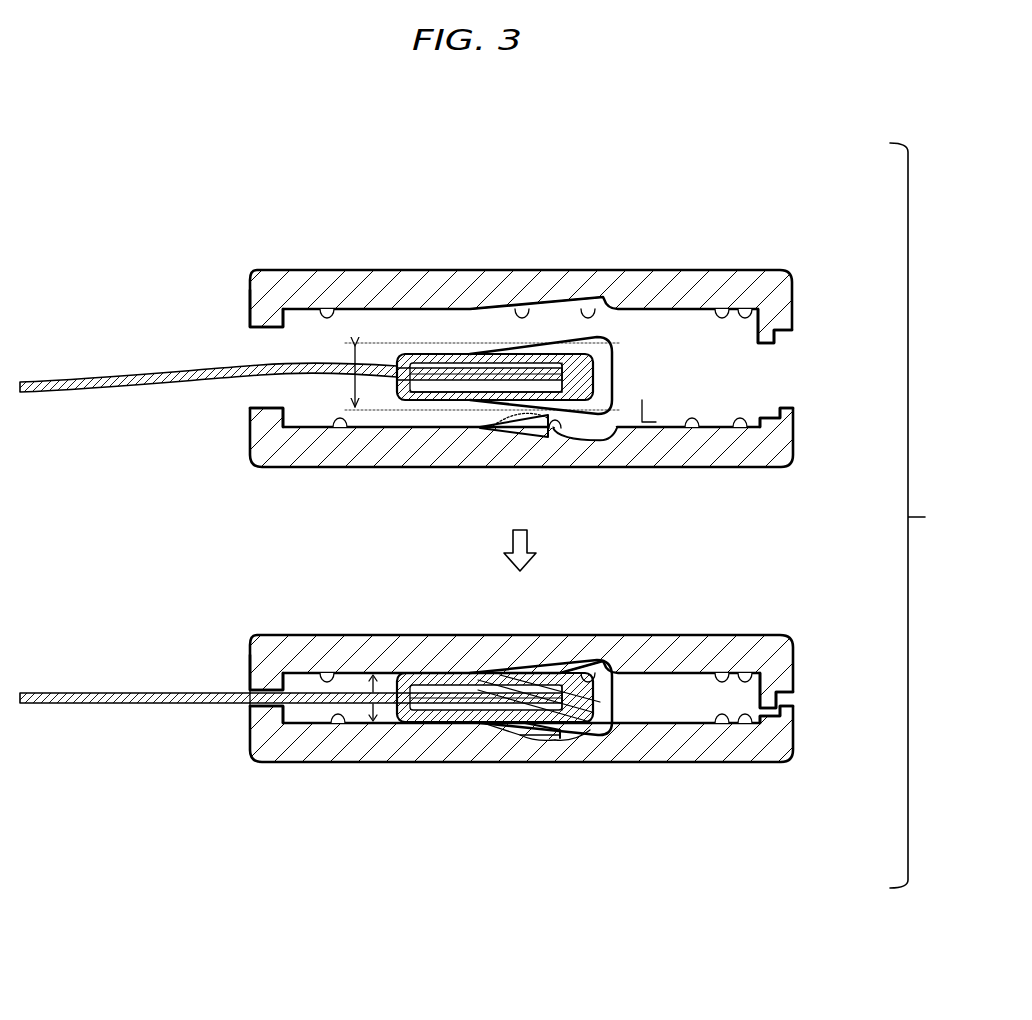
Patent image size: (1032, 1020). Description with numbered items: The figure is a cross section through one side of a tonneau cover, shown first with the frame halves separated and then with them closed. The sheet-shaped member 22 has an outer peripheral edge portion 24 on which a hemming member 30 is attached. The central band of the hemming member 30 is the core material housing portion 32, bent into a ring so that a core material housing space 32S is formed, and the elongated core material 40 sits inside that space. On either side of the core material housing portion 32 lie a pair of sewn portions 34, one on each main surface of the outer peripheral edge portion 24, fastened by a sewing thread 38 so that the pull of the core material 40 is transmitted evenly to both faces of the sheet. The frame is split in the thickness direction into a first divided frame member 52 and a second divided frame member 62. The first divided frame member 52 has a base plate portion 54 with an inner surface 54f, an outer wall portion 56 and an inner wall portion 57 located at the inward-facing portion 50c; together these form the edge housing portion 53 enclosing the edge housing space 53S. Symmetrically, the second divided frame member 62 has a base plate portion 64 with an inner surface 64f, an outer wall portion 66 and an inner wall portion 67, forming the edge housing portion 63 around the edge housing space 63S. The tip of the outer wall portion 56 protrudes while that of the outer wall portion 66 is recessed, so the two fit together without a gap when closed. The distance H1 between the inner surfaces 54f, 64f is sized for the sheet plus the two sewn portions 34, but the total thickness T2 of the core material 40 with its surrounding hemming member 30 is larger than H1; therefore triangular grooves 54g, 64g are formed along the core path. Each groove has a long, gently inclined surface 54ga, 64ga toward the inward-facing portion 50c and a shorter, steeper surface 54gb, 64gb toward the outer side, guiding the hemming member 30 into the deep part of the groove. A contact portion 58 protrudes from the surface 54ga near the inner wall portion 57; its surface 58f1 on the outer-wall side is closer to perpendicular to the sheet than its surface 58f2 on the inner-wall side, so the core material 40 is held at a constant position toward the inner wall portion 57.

The sheet-shaped member 22 is at (100, 380).
The outer peripheral edge portion 24 is at (478, 350).
The hemming member 30 is at (570, 354).
The core material housing portion 32 is at (596, 366).
The core material housing space 32S is at (594, 386).
The sewn portion 34 is at (410, 345).
The sewing thread 38 is at (432, 400).
The core material 40 is at (586, 318).
The inward-facing portion 50c is at (250, 745).
The first divided frame member 52 is at (800, 446).
The edge housing portion 53 is at (740, 429).
The edge housing space 53S is at (692, 429).
The base plate portion 54 is at (630, 468).
The inner surface 54f is at (340, 429).
The groove 54g is at (566, 441).
The surface 54ga is at (500, 736).
The surface 54gb is at (590, 742).
The outer wall portion 56 is at (796, 420).
The inner wall portion 57 is at (256, 410).
The contact portion 58 is at (586, 430).
The surface 58f1 is at (548, 430).
The surface 58f2 is at (485, 429).
The second divided frame member 62 is at (800, 288).
The edge housing portion 63 is at (745, 311).
The edge housing space 63S is at (722, 311).
The base plate portion 64 is at (300, 270).
The inner surface 64f is at (327, 311).
The groove 64g is at (575, 300).
The surface 64ga is at (522, 310).
The surface 64gb is at (616, 312).
The outer wall portion 66 is at (790, 332).
The inner wall portion 67 is at (252, 312).
The total thickness T2 is at (352, 391).
The distance H1 is at (376, 725).